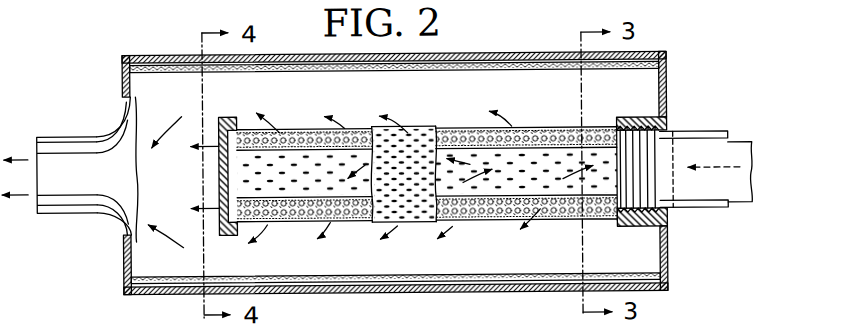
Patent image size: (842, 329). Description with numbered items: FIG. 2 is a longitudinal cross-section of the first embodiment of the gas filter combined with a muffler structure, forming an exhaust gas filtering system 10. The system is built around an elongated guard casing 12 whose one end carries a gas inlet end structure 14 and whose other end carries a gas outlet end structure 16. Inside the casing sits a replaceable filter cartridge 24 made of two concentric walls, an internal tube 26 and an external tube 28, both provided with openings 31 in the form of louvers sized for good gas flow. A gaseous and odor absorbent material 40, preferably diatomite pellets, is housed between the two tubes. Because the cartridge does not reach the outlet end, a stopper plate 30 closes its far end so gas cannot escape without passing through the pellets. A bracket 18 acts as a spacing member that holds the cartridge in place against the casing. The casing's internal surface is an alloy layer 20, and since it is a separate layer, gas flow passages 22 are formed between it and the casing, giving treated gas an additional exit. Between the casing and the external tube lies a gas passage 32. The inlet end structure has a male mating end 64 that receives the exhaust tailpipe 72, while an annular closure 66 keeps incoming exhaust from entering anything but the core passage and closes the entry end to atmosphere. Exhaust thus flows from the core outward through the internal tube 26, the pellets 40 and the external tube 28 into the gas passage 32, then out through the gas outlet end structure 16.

The exhaust gas filtering system 10 is at (137, 38).
The guard casing 12 is at (504, 54).
The gas inlet end structure 14 is at (681, 268).
The gas outlet end structure 16 is at (98, 220).
The bracket 18 is at (123, 90).
The alloy layer 20 is at (481, 72).
The gas flow passages 22 is at (222, 64).
The filter cartridge 24 is at (414, 223).
The internal tube 26 is at (504, 206).
The external tube 28 is at (541, 127).
The stopper plate 30 is at (219, 178).
The openings 31 is at (407, 150).
The gas passage 32 is at (470, 110).
The absorbent material 40 is at (294, 128).
The male mating end 64 is at (690, 211).
The annular closure 66 is at (669, 91).
The exhaust tailpipe 72 is at (737, 135).